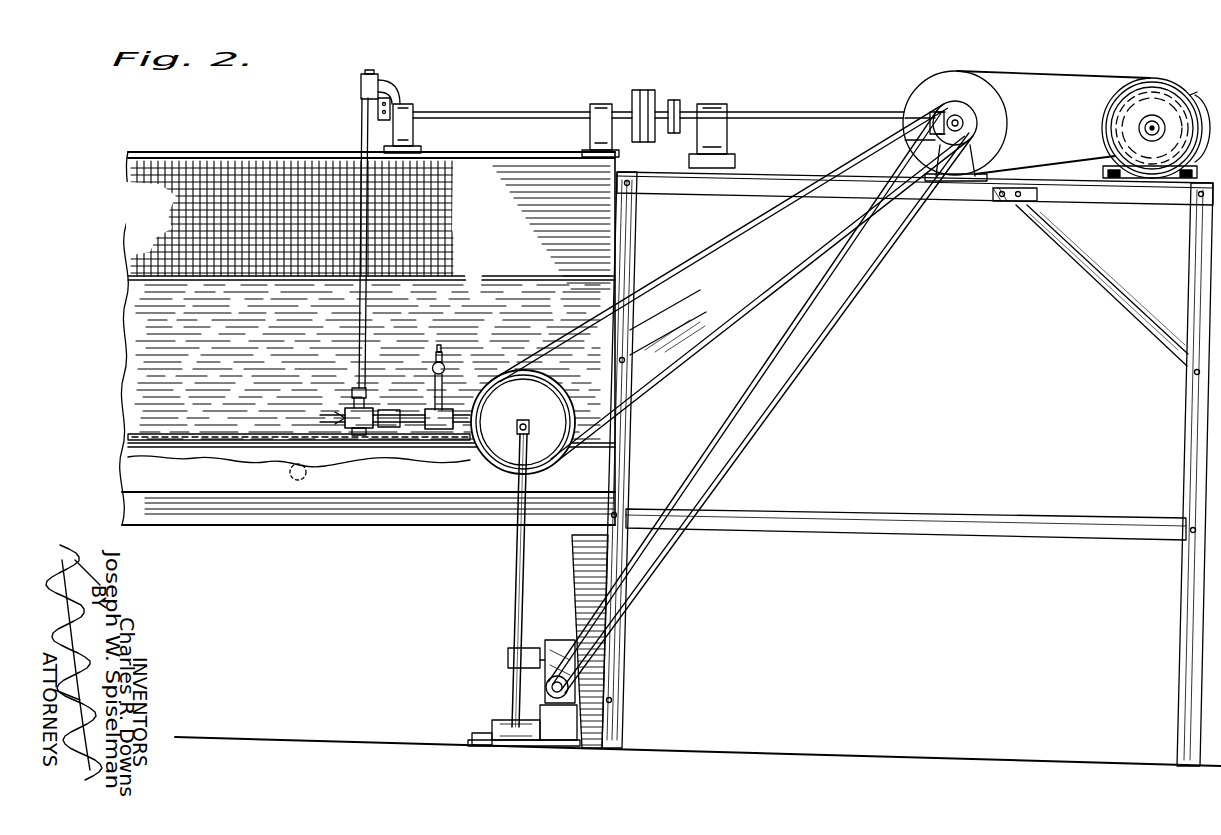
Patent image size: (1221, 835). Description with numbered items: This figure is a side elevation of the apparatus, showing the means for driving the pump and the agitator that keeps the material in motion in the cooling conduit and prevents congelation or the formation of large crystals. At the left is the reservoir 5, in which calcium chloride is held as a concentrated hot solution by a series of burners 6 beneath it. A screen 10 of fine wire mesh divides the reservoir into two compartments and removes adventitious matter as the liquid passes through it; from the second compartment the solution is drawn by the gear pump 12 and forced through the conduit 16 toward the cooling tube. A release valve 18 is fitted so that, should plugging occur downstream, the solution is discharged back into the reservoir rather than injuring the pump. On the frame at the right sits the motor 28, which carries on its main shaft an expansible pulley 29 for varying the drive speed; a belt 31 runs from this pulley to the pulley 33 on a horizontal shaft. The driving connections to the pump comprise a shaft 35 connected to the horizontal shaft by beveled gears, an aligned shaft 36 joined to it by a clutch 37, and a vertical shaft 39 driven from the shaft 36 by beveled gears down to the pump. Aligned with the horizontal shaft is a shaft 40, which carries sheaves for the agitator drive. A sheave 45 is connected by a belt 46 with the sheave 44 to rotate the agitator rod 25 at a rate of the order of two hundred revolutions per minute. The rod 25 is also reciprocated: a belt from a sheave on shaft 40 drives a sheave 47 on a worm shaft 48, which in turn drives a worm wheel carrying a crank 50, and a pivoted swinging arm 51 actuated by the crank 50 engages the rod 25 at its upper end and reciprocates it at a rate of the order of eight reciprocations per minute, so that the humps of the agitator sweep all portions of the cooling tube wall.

The reservoir 5 is at (248, 400).
The burners 6 is at (298, 481).
The screen 10 is at (207, 183).
The pump 12 is at (354, 422).
The conduit 16 is at (413, 423).
The release valve 18 is at (443, 368).
The agitator rod 25 is at (517, 428).
The motor 28 is at (1150, 100).
The expansible pulley 29 is at (1170, 90).
The belt 31 is at (1066, 92).
The pulley 33 is at (924, 98).
The shaft 35 is at (772, 112).
The aligned shaft 36 is at (507, 111).
The clutch 37 is at (645, 90).
The vertical shaft 39 is at (363, 137).
The shaft 40 is at (968, 126).
The sheave 44 is at (956, 108).
The sheave 45 is at (550, 400).
The belt 46 is at (692, 253).
The sheave 47 is at (578, 688).
The worm shaft 48 is at (568, 700).
The crank 50 is at (531, 648).
The pivoted swinging arm 51 is at (512, 570).